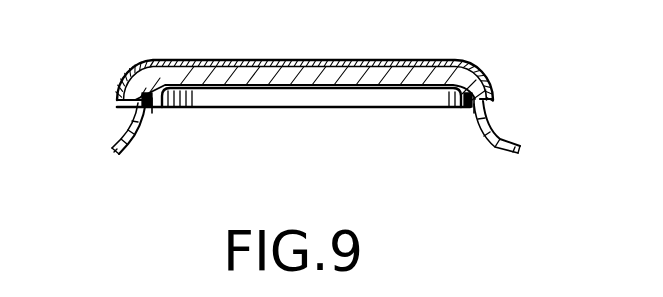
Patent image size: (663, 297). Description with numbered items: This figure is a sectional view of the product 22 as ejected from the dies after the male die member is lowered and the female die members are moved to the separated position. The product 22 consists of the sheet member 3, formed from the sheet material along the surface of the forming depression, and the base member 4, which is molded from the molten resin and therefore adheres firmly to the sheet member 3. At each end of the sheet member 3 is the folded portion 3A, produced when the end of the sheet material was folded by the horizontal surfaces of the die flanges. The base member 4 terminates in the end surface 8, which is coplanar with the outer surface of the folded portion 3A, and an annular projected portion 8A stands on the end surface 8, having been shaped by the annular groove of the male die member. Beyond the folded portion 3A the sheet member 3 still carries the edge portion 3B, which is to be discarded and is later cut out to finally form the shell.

The sheet member 3 is at (390, 60).
The folded portion 3A is at (132, 108).
The edge portion 3B is at (126, 158).
The base member 4 is at (370, 78).
The end surface 8 is at (148, 108).
The annular projected portion 8A is at (153, 112).
The product 22 is at (295, 100).